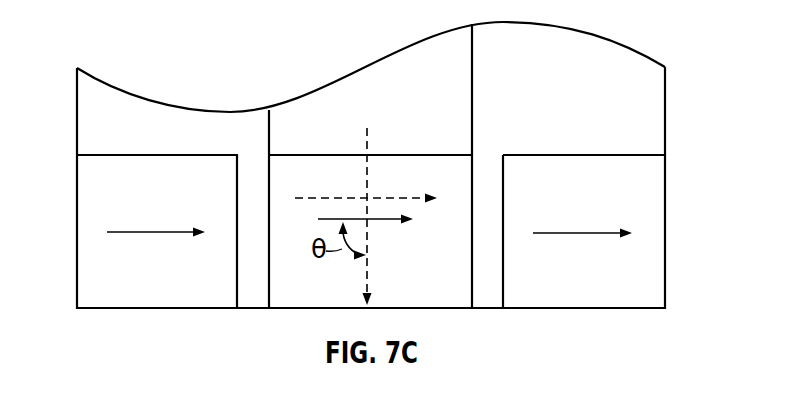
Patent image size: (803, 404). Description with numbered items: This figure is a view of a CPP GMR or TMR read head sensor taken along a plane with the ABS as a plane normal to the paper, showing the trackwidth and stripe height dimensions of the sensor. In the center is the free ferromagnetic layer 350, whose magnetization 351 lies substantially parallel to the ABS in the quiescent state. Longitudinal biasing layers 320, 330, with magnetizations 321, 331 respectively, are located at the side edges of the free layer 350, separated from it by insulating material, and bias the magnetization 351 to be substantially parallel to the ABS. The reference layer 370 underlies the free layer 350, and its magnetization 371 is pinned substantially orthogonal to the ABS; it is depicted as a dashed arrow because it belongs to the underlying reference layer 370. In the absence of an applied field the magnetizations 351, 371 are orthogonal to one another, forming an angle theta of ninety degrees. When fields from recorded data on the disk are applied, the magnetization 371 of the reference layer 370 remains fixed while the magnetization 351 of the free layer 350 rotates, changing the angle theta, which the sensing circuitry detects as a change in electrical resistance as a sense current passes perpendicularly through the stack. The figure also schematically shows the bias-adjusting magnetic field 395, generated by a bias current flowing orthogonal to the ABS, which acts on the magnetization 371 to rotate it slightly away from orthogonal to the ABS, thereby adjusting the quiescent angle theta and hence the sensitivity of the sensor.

The longitudinal biasing layer 320 is at (97, 303).
The magnetization of longitudinal biasing layer 321 is at (152, 232).
The longitudinal biasing layer 330 is at (648, 264).
The magnetization of longitudinal biasing layer 331 is at (579, 233).
The free ferromagnetic layer 350 is at (282, 302).
The magnetization of free layer 351 is at (387, 222).
The reference layer 370 is at (453, 65).
The magnetization of reference layer 371 is at (372, 268).
The bias-adjusting magnetic field 395 is at (343, 193).
The air bearing surface ABS is at (617, 310).